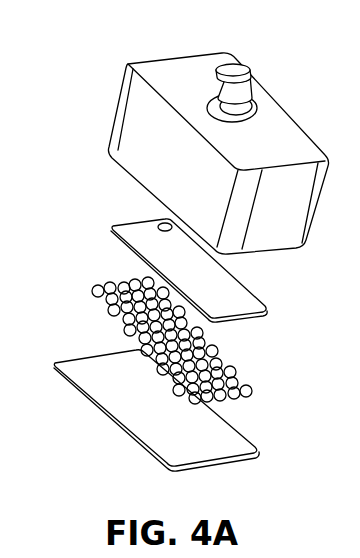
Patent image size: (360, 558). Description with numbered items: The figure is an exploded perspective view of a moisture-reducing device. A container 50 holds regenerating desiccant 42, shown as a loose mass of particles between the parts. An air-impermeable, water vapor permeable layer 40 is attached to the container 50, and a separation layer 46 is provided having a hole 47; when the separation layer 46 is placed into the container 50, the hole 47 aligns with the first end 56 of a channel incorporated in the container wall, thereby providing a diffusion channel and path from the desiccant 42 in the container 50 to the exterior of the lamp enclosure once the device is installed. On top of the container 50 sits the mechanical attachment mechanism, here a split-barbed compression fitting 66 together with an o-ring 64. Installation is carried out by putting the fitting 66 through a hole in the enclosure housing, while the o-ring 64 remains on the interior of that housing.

The container 50 is at (162, 54).
The o-ring 64 is at (266, 118).
The split-barbed compression fitting 66 is at (263, 81).
The separation layer 46 is at (129, 213).
The hole 47 is at (176, 241).
The regenerating desiccant 42 is at (230, 381).
The air-impermeable, water vapor permeable layer 40 is at (73, 396).
The first end 56 is at (349, 545).